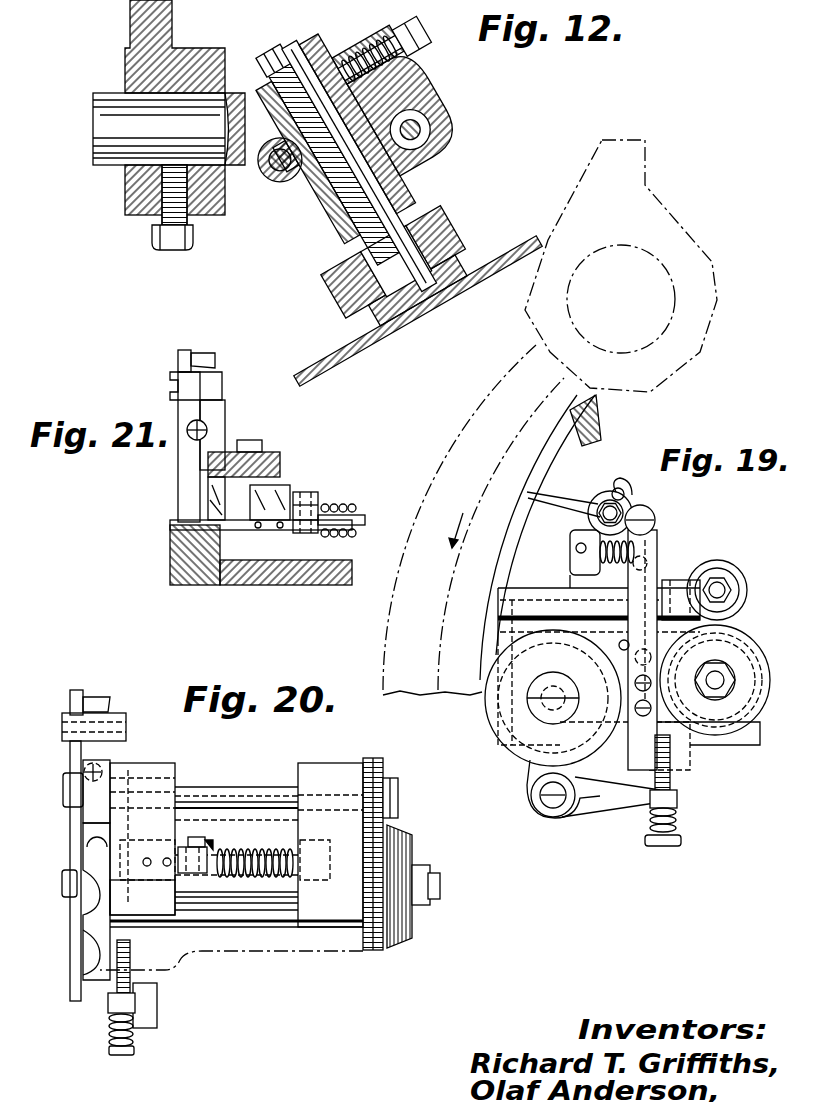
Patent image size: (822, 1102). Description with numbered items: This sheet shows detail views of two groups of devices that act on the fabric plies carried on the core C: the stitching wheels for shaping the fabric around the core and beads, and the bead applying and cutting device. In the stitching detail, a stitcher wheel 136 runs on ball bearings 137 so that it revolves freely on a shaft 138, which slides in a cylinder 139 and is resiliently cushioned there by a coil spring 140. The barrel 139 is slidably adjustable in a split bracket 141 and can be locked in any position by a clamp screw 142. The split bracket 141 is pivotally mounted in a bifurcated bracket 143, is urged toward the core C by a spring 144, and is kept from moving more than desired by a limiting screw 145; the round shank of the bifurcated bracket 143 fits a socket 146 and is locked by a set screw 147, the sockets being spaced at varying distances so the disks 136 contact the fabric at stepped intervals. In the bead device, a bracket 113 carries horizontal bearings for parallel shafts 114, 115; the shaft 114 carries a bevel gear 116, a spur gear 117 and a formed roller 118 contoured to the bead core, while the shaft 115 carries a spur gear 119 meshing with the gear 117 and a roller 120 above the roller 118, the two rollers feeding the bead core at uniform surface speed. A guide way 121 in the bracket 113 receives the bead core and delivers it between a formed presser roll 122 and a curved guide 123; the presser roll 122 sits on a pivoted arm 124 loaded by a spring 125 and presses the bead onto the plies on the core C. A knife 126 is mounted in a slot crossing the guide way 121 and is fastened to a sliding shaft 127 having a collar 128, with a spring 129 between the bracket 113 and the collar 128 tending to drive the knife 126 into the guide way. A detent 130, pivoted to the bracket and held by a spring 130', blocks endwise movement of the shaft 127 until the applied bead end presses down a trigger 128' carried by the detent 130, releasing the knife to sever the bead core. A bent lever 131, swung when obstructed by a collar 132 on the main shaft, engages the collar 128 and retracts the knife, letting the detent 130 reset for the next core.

In FIG. 19, the bracket 113 is at (702, 742).
In FIG. 21, the bracket 113 is at (268, 586).
In FIG. 20, the bracket 113 is at (308, 927).
In FIG. 19, the shaft 114 is at (720, 688).
In FIG. 20, the shaft 114 is at (243, 883).
In FIG. 19, the shaft 115 is at (719, 589).
In FIG. 20, the shaft 115 is at (230, 787).
In FIG. 20, the bevel gear 116 is at (402, 858).
In FIG. 20, the spur gear 117 is at (373, 950).
In FIG. 19, the formed roller 118 is at (746, 660).
In FIG. 20, the formed roller 118 is at (92, 928).
In FIG. 20, the spur gear 119 is at (372, 762).
In FIG. 19, the roller 120 is at (747, 585).
In FIG. 20, the roller 120 is at (93, 798).
In FIG. 19, the guide way 121 is at (742, 632).
In FIG. 21, the guide way 121 is at (212, 500).
In FIG. 20, the presser roll 122 is at (92, 962).
In FIG. 19, the curved guide 123 is at (510, 625).
In FIG. 19, the pivoted arm 124 is at (622, 800).
In FIG. 20, the pivoted arm 124 is at (115, 1005).
In FIG. 19, the spring 125 is at (672, 825).
In FIG. 20, the spring 125 is at (108, 1033).
In FIG. 19, the knife 126 is at (650, 580).
In FIG. 21, the knife 126 is at (283, 490).
In FIG. 20, the knife 126 is at (137, 805).
In FIG. 19, the sliding shaft 127 is at (630, 660).
In FIG. 21, the sliding shaft 127 is at (360, 513).
In FIG. 20, the sliding shaft 127 is at (243, 850).
In FIG. 21, the collar 128 is at (320, 504).
In FIG. 20, the collar 128 is at (206, 844).
In FIG. 19, the trigger 128' is at (591, 496).
In FIG. 21, the trigger 128' is at (215, 359).
In FIG. 20, the trigger 128' is at (104, 692).
In FIG. 21, the spring 129 is at (345, 537).
In FIG. 20, the spring 129 is at (270, 850).
In FIG. 19, the detent 130 is at (622, 624).
In FIG. 21, the detent 130 is at (176, 447).
In FIG. 20, the detent 130 is at (74, 857).
In FIG. 19, the spring 130' is at (593, 554).
In FIG. 21, the spring 130' is at (226, 435).
In FIG. 20, the spring 130' is at (64, 765).
In FIG. 21, the bent lever 131 is at (305, 532).
In FIG. 20, the bent lever 131 is at (200, 898).
In FIG. 19, the collar 132 is at (490, 712).
In FIG. 12, the stitcher wheel 136 is at (339, 353).
In FIG. 19, the stitcher wheel 136 is at (648, 560).
In FIG. 12, the ball bearings 137 is at (350, 292).
In FIG. 12, the shaft 138 is at (358, 229).
In FIG. 12, the cylinder 139 is at (304, 62).
In FIG. 12, the coil spring 140 is at (312, 186).
In FIG. 12, the split bracket 141 is at (442, 135).
In FIG. 12, the clamp screw 142 is at (273, 176).
In FIG. 12, the bifurcated bracket 143 is at (228, 105).
In FIG. 12, the spring 144 is at (343, 52).
In FIG. 12, the limiting screw 145 is at (417, 50).
In FIG. 12, the socket 146 is at (202, 42).
In FIG. 12, the set screw 147 is at (175, 250).
In FIG. 19, the core C is at (690, 248).